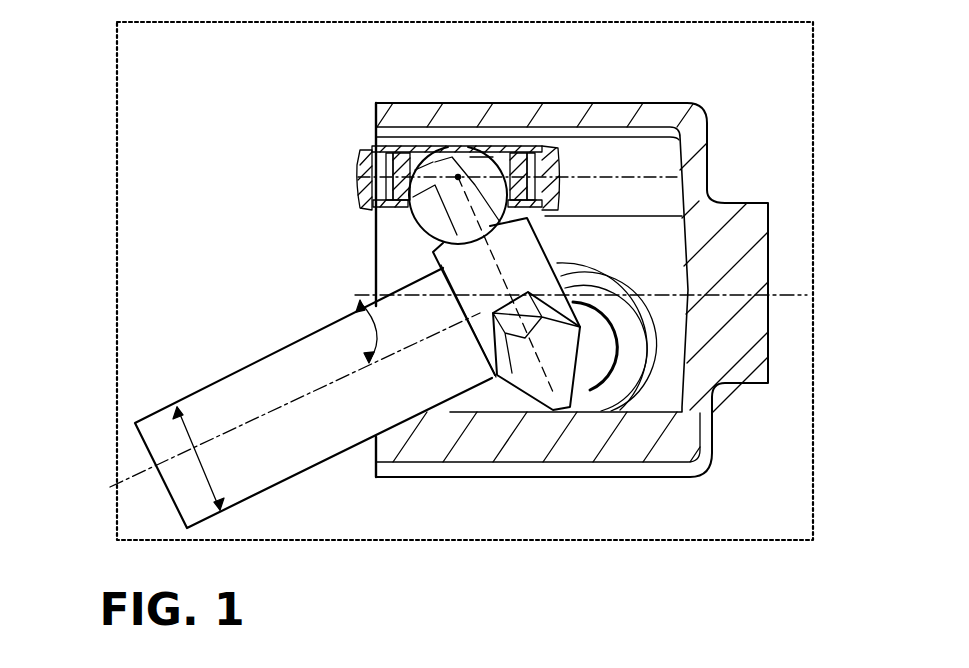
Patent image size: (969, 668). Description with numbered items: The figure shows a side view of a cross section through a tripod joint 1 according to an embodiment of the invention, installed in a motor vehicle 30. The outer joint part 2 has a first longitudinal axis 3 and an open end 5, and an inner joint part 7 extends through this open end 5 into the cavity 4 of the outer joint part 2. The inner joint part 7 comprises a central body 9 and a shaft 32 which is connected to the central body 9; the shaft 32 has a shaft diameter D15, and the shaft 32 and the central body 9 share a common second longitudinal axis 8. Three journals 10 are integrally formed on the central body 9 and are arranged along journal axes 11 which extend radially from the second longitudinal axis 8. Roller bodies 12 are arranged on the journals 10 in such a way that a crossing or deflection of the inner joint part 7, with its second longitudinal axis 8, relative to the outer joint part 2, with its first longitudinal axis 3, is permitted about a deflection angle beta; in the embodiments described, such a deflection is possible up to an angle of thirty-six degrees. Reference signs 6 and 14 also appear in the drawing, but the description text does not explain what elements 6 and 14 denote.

The tripod joint 1 is at (302, 224).
The outer joint part 2 is at (627, 452).
The first longitudinal axis 3 is at (797, 290).
The cavity 4 is at (700, 410).
The open end 5 is at (300, 258).
The element 6 is at (533, 655).
The inner joint part 7 is at (410, 323).
The second longitudinal axis 8 is at (250, 433).
The central body 9 is at (530, 265).
The journals 10 is at (523, 377).
The journal axes 11 is at (553, 380).
The roller bodies 12 is at (363, 143).
The element 14 is at (607, 658).
The motor vehicle 30 is at (728, 538).
The shaft 32 is at (317, 417).
The shaft diameter D15 is at (140, 452).